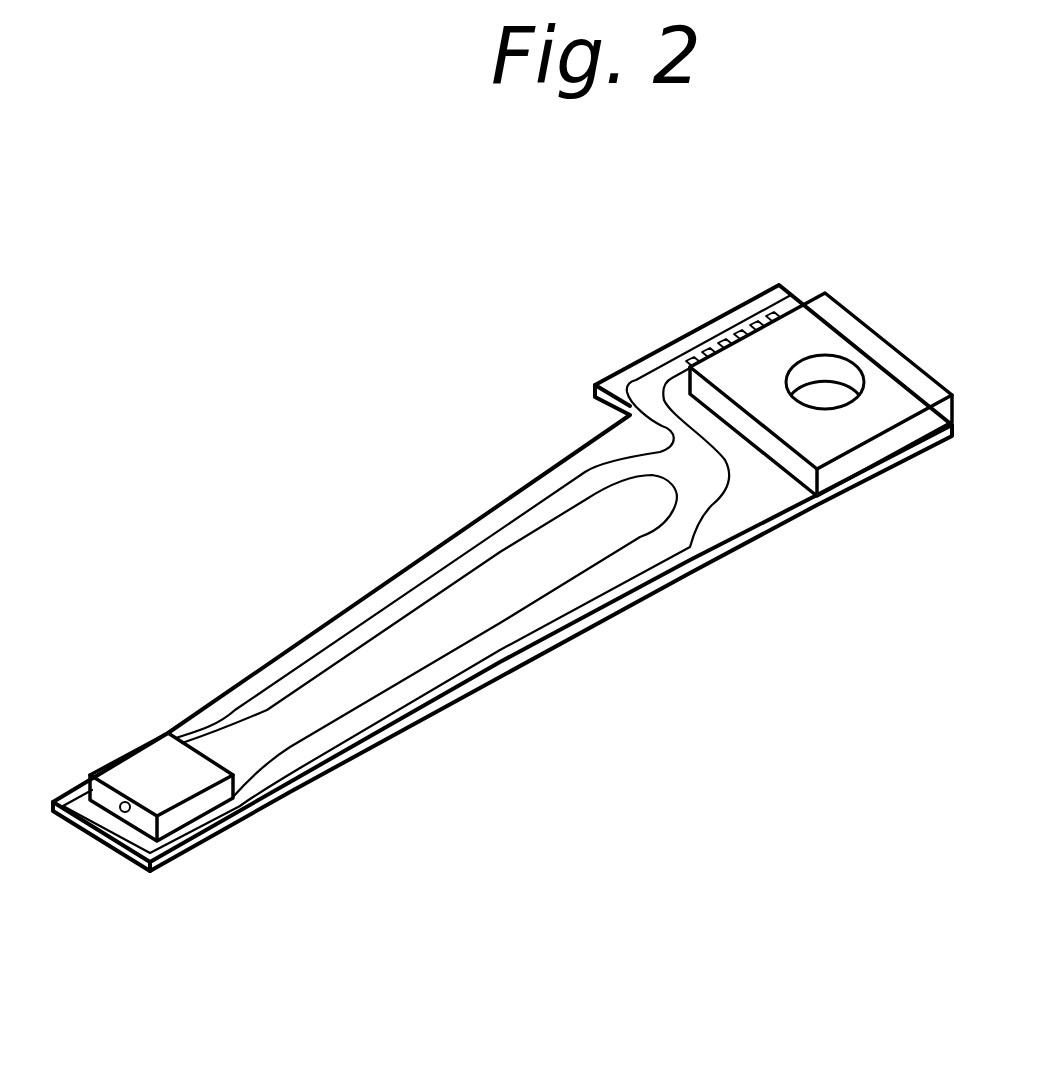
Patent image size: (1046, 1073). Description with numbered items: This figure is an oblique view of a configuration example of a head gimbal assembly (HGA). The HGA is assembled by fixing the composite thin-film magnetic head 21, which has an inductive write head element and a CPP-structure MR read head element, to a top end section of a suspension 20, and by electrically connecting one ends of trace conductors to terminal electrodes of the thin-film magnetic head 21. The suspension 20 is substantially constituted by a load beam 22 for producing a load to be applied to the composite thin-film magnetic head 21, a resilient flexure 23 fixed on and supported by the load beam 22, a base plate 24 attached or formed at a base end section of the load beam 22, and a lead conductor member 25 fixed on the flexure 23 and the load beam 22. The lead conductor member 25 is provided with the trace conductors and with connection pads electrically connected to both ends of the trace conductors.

The suspension 20 is at (521, 416).
The composite thin-film magnetic head 21 is at (133, 777).
The load beam 22 is at (728, 528).
The flexure 23 is at (612, 540).
The base plate 24 is at (887, 408).
The lead conductor member 25 is at (420, 677).